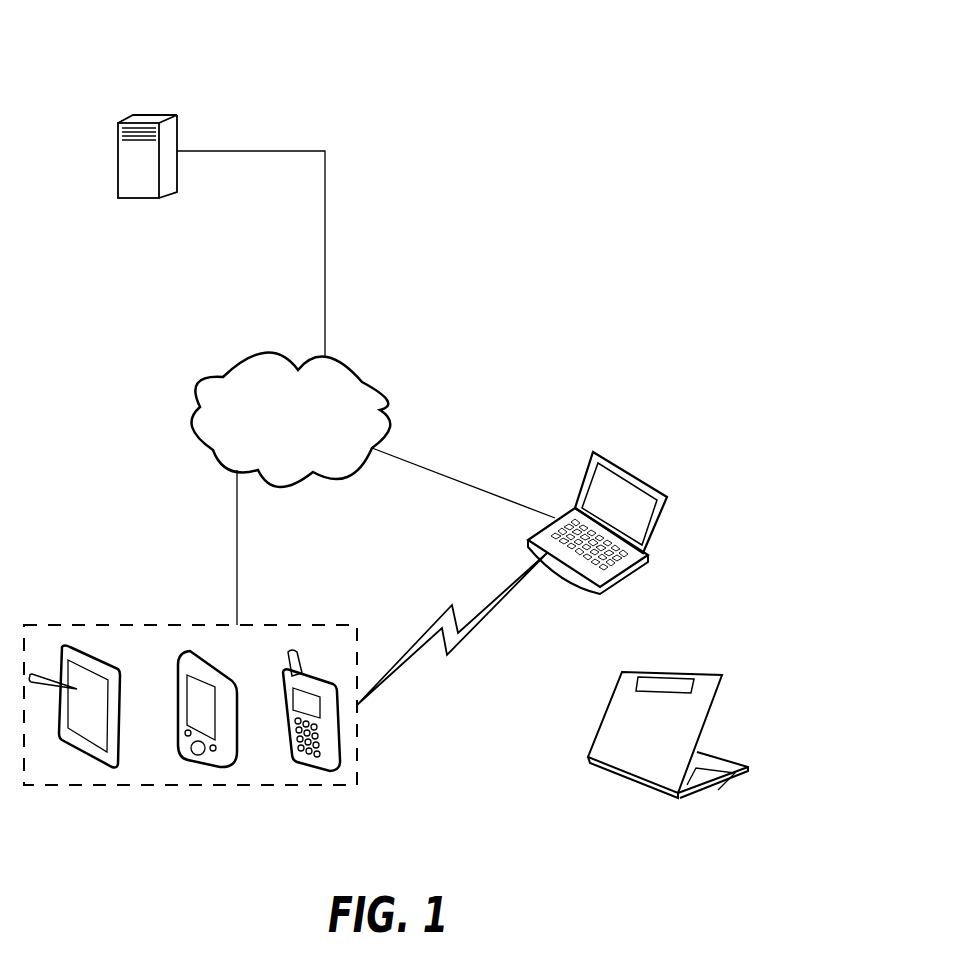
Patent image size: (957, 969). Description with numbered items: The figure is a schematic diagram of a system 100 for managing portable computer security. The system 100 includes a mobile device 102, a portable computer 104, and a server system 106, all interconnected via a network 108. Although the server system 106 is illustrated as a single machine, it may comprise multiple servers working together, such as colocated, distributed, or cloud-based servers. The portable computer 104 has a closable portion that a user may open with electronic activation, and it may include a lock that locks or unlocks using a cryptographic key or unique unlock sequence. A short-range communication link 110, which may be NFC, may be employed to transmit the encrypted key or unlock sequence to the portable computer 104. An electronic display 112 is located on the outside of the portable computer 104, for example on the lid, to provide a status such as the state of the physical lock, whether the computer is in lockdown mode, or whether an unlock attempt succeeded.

The system 100 is at (523, 40).
The mobile device 102 is at (335, 622).
The portable computer 104 is at (647, 480).
The server system 106 is at (153, 115).
The network 108 is at (362, 373).
The short-range communication link 110 is at (465, 642).
The electronic display 112 is at (662, 685).